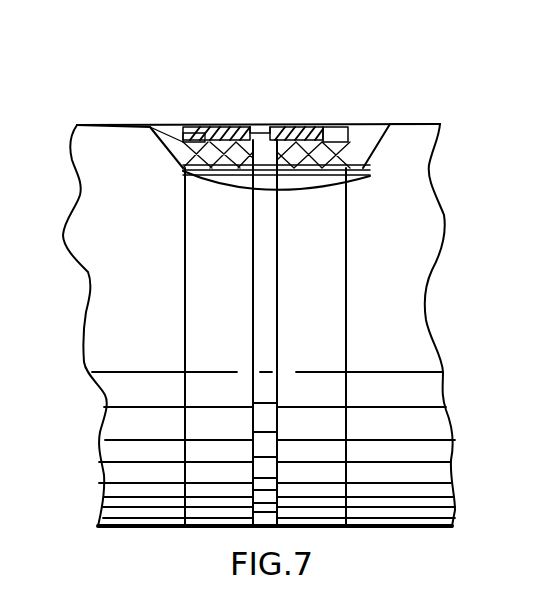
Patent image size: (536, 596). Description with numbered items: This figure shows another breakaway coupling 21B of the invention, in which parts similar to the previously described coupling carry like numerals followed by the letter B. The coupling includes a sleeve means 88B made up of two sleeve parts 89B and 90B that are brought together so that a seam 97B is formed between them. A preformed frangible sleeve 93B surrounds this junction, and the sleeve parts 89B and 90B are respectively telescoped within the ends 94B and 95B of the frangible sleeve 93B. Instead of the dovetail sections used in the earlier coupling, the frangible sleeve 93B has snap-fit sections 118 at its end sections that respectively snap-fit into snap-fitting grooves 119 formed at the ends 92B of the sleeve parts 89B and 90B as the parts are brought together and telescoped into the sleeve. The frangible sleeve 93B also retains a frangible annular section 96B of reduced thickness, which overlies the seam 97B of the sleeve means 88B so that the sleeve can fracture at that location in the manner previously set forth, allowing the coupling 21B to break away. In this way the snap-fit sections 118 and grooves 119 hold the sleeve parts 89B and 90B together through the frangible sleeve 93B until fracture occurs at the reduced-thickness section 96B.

The breakaway coupling 21B is at (290, 65).
The sleeve means 88B is at (400, 525).
The sleeve part 89B is at (108, 295).
The sleeve part 90B is at (407, 277).
The ends of the sleeve parts 92B is at (250, 127).
The frangible sleeve 93B is at (237, 126).
The end of the frangible sleeve 94B is at (197, 126).
The end of the frangible sleeve 95B is at (330, 127).
The frangible annular section 96B is at (264, 127).
The seam 97B is at (243, 186).
The snap-fit sections 118 is at (173, 125).
The snap-fitting grooves 119 is at (190, 155).